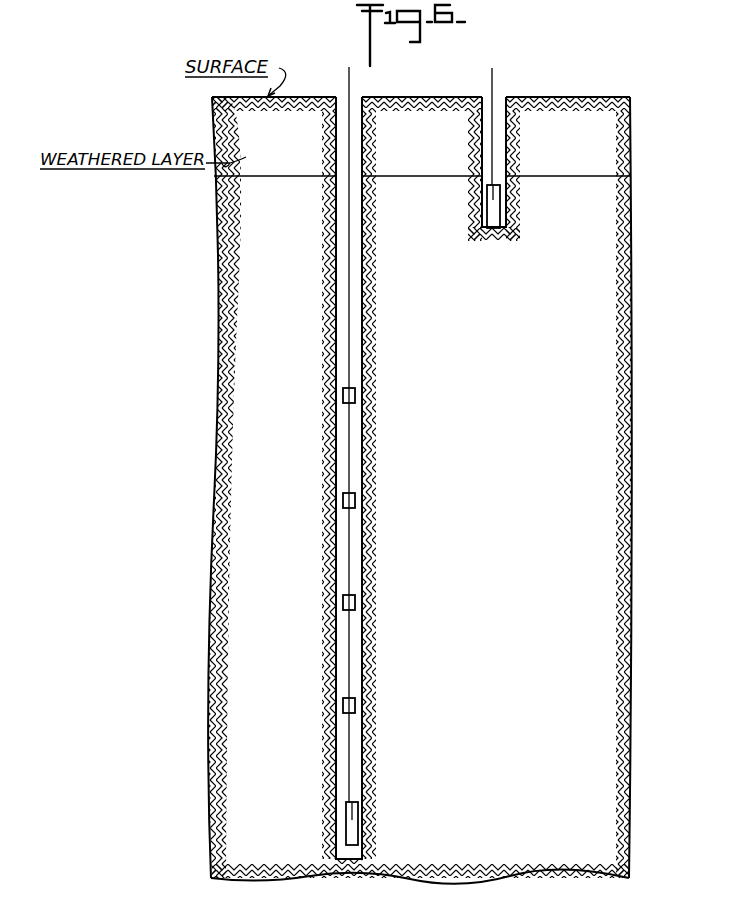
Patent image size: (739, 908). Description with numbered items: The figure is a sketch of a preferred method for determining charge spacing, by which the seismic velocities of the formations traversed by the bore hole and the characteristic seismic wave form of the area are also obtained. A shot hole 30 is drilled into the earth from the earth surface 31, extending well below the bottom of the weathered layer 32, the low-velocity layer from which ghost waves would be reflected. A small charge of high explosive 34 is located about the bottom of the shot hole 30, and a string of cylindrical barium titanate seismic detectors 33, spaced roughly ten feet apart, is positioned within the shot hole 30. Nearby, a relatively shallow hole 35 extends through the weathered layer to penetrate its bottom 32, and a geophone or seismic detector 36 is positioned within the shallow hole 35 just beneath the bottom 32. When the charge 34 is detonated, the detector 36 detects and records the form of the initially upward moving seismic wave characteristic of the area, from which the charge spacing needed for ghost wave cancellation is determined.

The shot hole 30 is at (356, 309).
The earth surface 31 is at (555, 79).
The bottom of the weathered layer 32 is at (590, 176).
The seismic detectors 33 is at (356, 396).
The charge of high explosive 34 is at (352, 818).
The shallow hole 35 is at (499, 139).
The geophone or seismic detector 36 is at (494, 206).